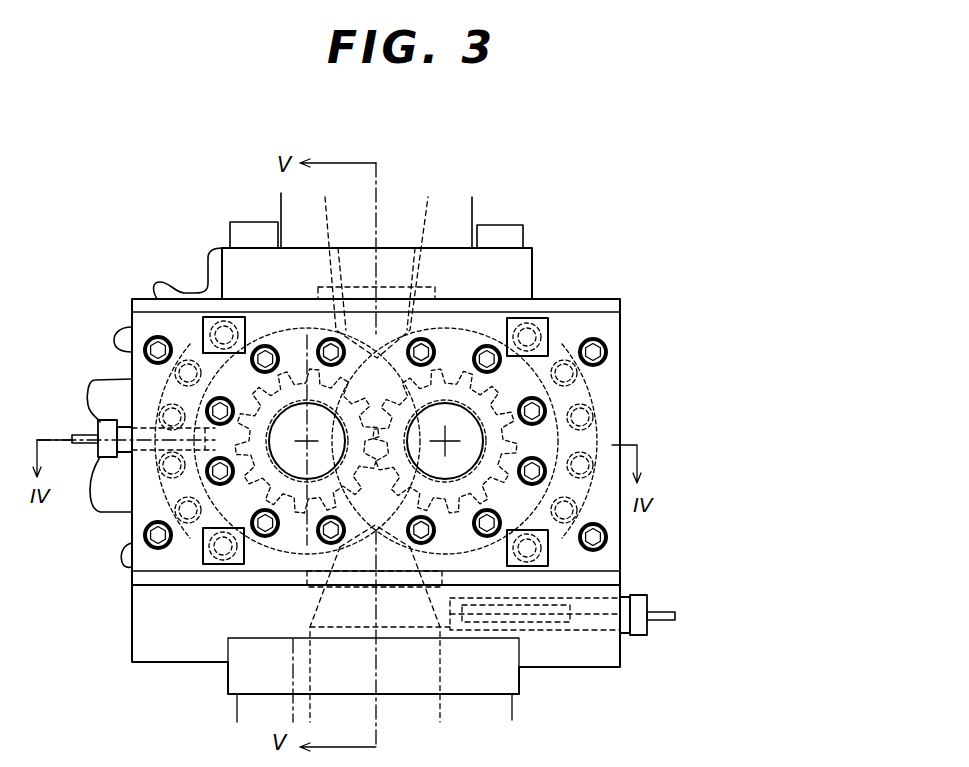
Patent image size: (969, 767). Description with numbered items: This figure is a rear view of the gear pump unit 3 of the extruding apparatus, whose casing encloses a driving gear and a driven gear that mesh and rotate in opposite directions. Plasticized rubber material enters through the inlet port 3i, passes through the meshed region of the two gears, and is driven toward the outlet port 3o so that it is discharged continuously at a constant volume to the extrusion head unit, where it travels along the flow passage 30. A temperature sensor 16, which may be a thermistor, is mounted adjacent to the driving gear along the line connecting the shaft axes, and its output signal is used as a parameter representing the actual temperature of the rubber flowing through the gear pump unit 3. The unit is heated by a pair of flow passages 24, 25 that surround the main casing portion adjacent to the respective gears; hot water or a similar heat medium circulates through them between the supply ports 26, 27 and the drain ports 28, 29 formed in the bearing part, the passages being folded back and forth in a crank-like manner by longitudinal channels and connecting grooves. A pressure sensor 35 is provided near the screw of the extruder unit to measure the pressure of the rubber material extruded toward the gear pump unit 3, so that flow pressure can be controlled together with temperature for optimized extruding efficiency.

The gear pump unit 3 is at (630, 401).
The outlet port 3o is at (381, 333).
The inlet port 3i is at (382, 545).
The temperature sensor 16 is at (98, 457).
The flow passage 24 is at (103, 374).
The flow passage 25 is at (586, 388).
The supply port 26 is at (210, 333).
The supply port 27 is at (547, 340).
The drain port 28 is at (200, 550).
The drain port 29 is at (547, 550).
The flow passage 30 is at (383, 262).
The pressure sensor 35 is at (638, 637).